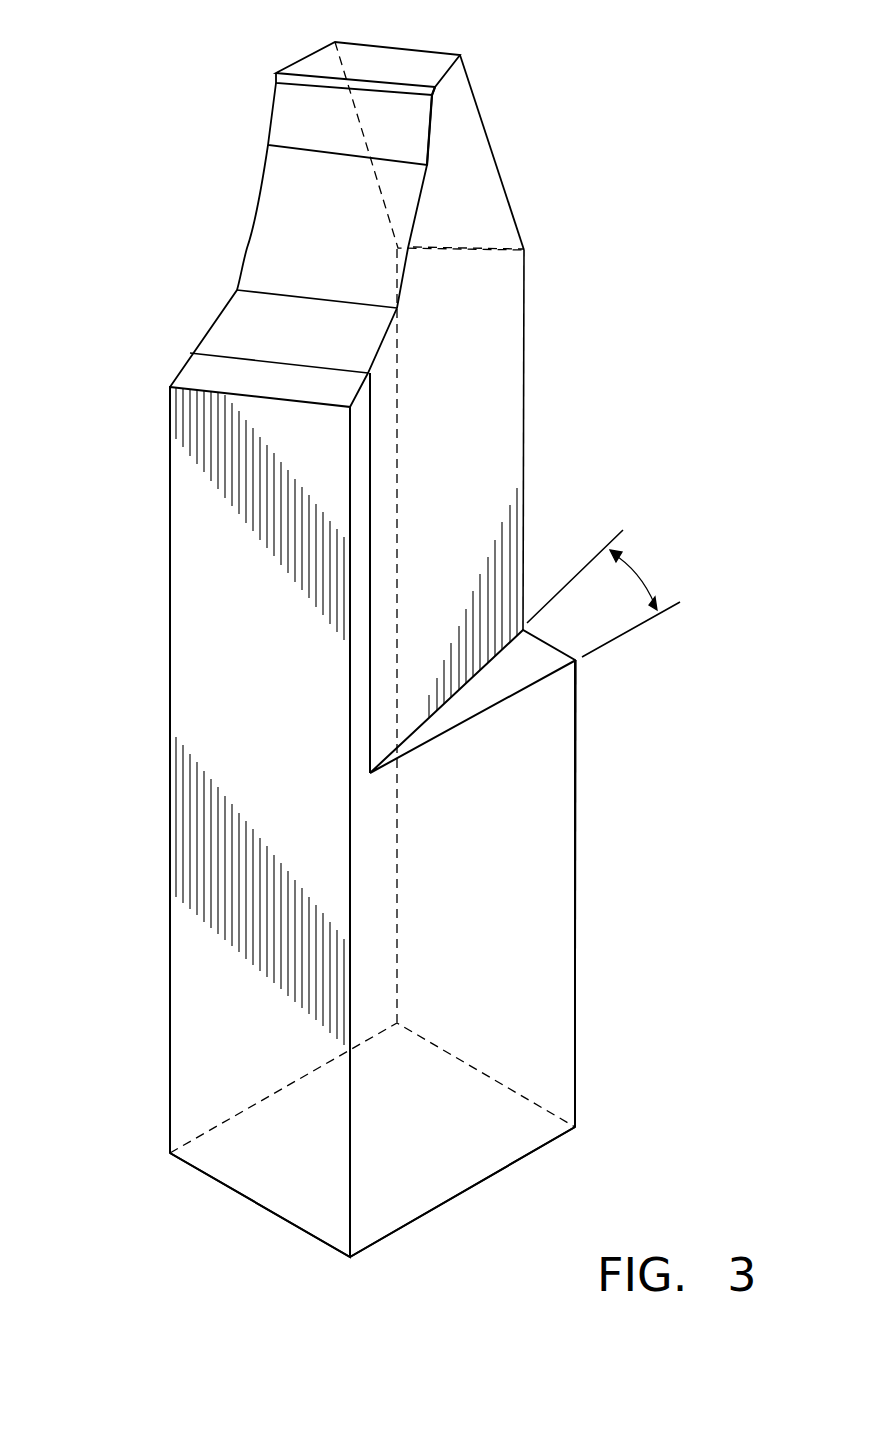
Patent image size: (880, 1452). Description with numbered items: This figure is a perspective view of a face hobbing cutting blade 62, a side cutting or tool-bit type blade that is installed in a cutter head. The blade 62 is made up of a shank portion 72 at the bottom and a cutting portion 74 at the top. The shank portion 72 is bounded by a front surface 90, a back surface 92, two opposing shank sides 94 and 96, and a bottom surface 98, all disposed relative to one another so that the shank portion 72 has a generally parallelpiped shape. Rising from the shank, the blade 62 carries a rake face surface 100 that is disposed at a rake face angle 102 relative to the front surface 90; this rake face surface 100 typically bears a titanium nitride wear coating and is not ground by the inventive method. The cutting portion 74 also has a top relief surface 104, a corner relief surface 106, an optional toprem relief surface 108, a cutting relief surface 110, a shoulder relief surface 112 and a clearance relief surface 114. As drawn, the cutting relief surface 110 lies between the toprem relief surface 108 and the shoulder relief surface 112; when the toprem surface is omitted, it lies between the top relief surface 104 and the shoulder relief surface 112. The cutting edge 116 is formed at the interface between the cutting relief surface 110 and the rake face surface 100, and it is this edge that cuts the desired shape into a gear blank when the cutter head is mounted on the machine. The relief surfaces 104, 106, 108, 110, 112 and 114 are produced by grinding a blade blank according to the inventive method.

The cutting blade 62 is at (508, 77).
The shank portion 72 is at (168, 932).
The cutting portion 74 is at (427, 167).
The front surface 90 is at (545, 1024).
The back surface 92 is at (230, 1005).
The shank side 94 is at (190, 1108).
The shank side 96 is at (520, 918).
The bottom surface 98 is at (410, 1177).
The rake face surface 100 is at (488, 445).
The rake face angle 102 is at (637, 575).
The top relief surface 104 is at (400, 60).
The corner relief surface 106 is at (315, 63).
The toprem relief surface 108 is at (290, 118).
The cutting relief surface 110 is at (268, 245).
The shoulder relief surface 112 is at (205, 365).
The clearance relief surface 114 is at (455, 178).
The cutting edge 116 is at (413, 230).